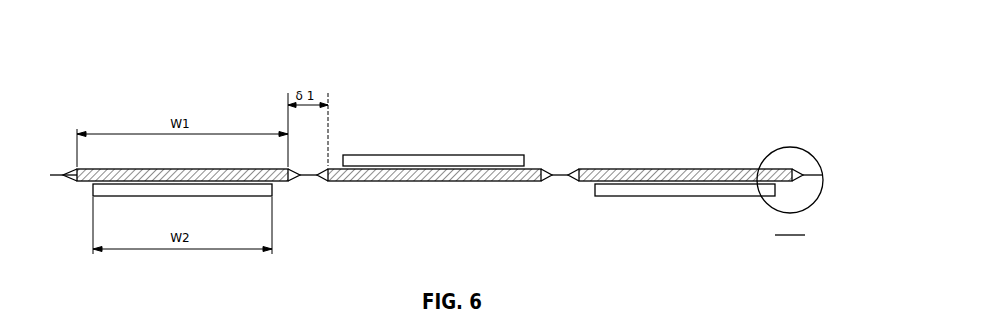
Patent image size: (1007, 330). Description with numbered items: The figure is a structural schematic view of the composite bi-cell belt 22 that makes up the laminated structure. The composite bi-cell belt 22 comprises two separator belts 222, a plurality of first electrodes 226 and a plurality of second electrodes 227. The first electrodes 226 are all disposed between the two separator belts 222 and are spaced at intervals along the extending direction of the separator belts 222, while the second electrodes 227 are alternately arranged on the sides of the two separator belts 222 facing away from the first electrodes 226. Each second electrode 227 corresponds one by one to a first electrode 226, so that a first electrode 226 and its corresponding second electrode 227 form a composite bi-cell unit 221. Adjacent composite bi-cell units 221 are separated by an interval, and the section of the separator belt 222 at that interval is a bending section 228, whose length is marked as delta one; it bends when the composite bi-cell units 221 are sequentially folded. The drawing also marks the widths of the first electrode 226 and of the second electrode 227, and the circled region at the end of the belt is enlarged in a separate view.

The composite bi-cell belt 22 is at (446, 148).
The composite bi-cell unit 221 is at (705, 174).
The separator belt 222 is at (795, 167).
The first electrode 226 is at (630, 168).
The second electrode 227 is at (632, 188).
The bending section 228 is at (558, 177).